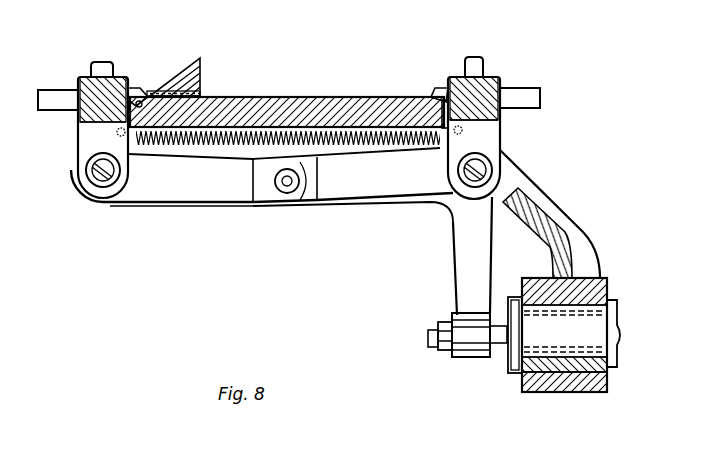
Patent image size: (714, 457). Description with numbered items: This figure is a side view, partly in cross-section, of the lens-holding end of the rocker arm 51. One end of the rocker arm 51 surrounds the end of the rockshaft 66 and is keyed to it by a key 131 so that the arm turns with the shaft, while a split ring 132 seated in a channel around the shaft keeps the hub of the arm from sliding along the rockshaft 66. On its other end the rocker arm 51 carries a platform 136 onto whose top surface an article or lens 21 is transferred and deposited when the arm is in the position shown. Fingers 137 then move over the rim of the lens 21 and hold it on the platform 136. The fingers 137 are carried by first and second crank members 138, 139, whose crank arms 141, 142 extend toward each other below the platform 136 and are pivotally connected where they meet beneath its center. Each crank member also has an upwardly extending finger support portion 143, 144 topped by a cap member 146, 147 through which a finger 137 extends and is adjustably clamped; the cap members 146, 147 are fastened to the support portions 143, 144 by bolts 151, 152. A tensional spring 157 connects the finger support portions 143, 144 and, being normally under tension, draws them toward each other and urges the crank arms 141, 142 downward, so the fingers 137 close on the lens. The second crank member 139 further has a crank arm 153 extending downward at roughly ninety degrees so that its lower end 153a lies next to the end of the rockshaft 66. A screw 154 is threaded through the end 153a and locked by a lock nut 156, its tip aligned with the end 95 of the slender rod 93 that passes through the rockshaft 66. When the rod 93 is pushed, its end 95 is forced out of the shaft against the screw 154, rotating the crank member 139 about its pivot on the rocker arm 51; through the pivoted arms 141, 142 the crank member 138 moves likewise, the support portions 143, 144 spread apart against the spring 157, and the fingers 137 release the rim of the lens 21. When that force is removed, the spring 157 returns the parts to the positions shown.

The lens 21 is at (190, 64).
The rocker arm 51 is at (540, 194).
The rockshaft 66 is at (607, 362).
The rod 93 is at (619, 340).
The end of rod 95 is at (505, 326).
The key 131 is at (610, 375).
The split ring 132 is at (515, 375).
The platform 136 is at (298, 100).
The fingers 137 is at (132, 96).
The first crank member 138 is at (205, 188).
The second crank member 139 is at (388, 188).
The crank arm 141 is at (218, 190).
The crank arm 142 is at (362, 192).
The finger support portion 143 is at (80, 139).
The finger support portion 144 is at (500, 134).
The cap member 146 is at (80, 78).
The cap member 147 is at (500, 80).
The bolt 151 is at (102, 62).
The bolt 152 is at (473, 57).
The crank arm 153 is at (458, 270).
The lower end of crank arm 153a is at (475, 358).
The screw 154 is at (430, 337).
The lock nut 156 is at (440, 350).
The tensional spring 157 is at (345, 148).